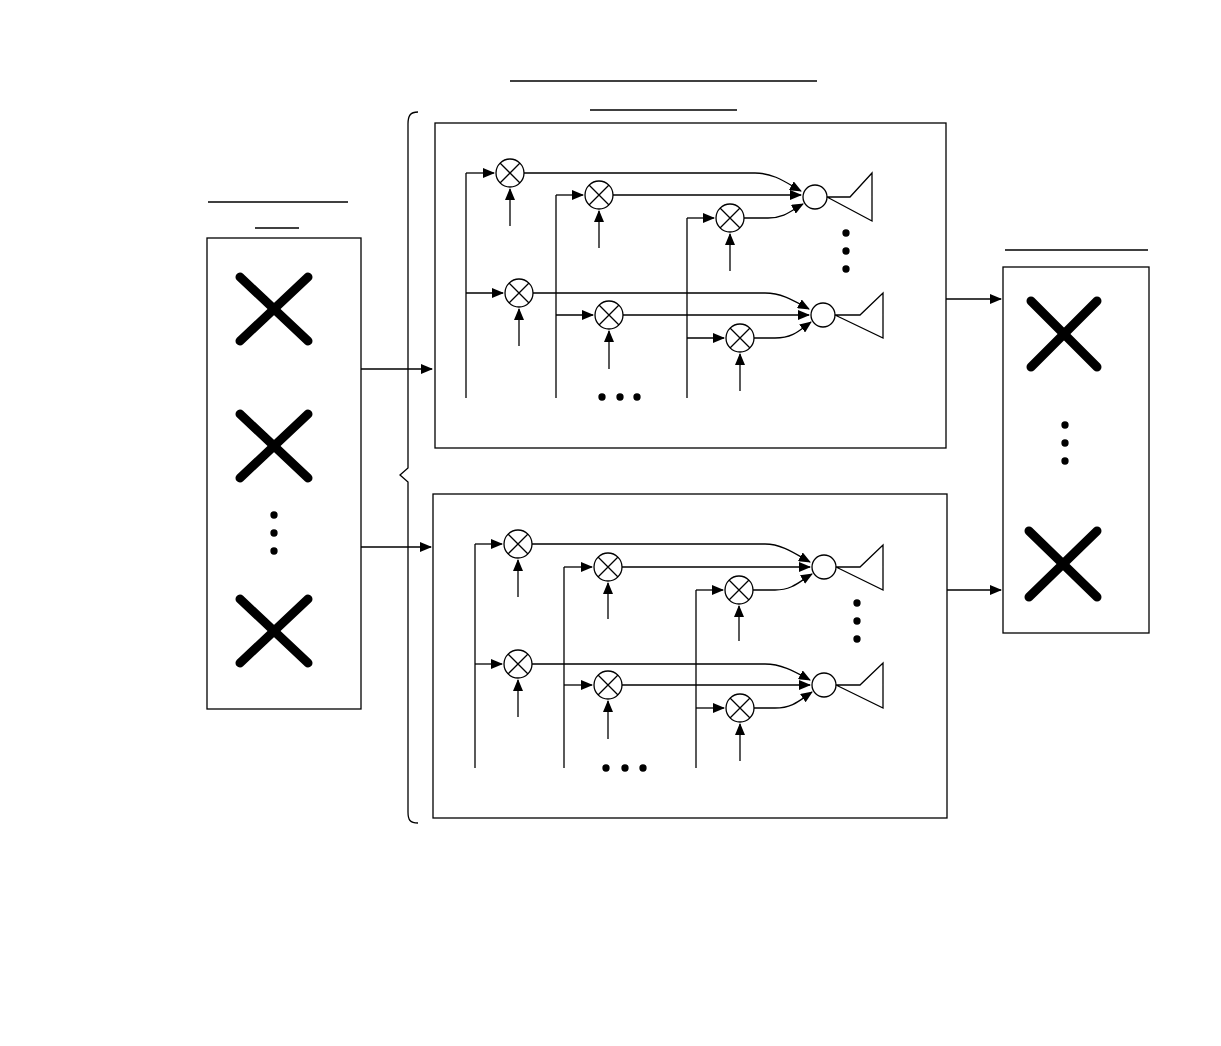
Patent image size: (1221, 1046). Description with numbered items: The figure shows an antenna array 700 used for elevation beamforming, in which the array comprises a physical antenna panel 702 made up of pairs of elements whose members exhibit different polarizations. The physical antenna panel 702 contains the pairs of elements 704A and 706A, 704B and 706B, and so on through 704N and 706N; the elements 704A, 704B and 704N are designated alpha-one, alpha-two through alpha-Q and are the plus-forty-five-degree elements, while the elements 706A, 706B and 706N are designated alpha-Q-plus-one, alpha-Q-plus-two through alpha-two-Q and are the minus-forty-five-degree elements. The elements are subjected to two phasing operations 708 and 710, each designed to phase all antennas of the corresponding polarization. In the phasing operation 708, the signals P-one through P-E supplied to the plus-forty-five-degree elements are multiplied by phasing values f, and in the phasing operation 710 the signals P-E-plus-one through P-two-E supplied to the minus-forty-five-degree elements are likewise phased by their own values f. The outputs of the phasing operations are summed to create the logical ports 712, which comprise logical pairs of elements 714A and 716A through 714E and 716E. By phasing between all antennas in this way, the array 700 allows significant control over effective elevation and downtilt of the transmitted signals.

The array 700 is at (256, 80).
The physical antenna panel 702 is at (338, 238).
The element 704A is at (305, 277).
The element 704B is at (305, 414).
The element 704N is at (305, 599).
The element 706A is at (243, 343).
The element 706B is at (306, 480).
The element 706N is at (306, 667).
The phasing operation 708 is at (879, 123).
The phasing operation 710 is at (879, 495).
The logical ports 712 is at (1149, 314).
The logical element 714A is at (1096, 300).
The logical element 714E is at (1096, 530).
The logical element 716A is at (1095, 370).
The logical element 716E is at (1094, 600).